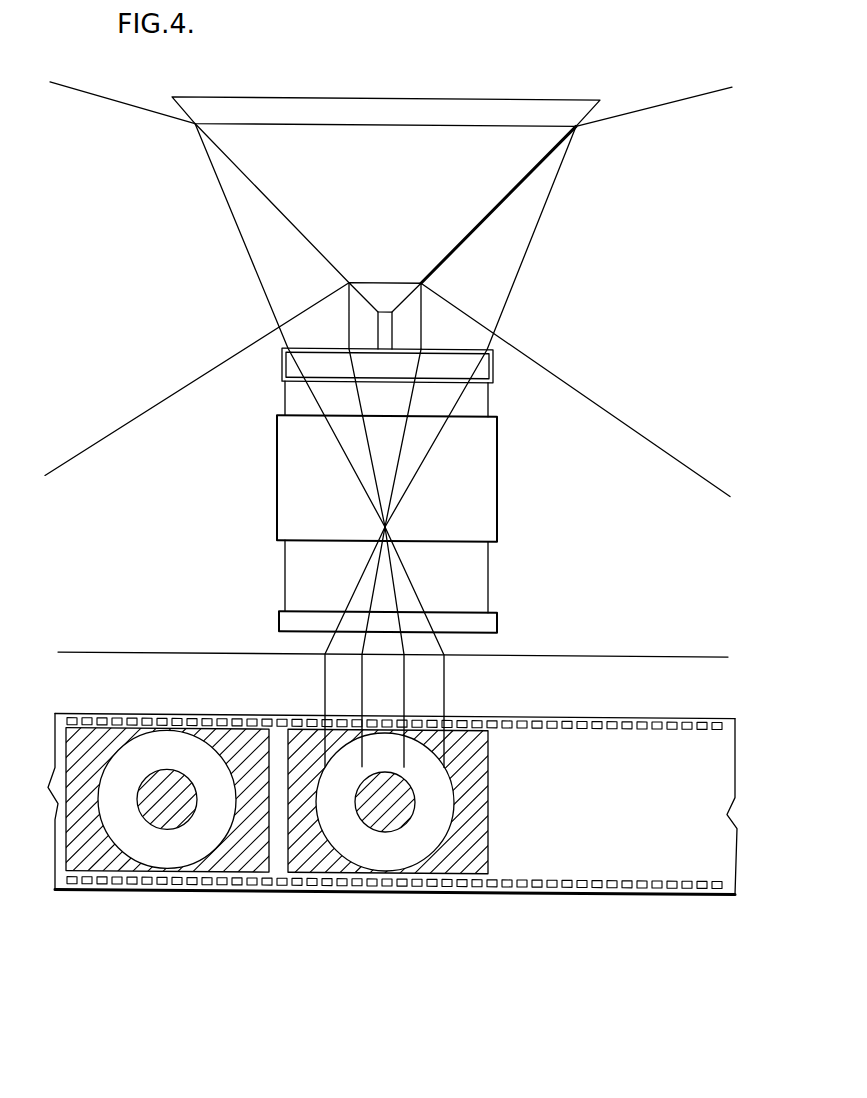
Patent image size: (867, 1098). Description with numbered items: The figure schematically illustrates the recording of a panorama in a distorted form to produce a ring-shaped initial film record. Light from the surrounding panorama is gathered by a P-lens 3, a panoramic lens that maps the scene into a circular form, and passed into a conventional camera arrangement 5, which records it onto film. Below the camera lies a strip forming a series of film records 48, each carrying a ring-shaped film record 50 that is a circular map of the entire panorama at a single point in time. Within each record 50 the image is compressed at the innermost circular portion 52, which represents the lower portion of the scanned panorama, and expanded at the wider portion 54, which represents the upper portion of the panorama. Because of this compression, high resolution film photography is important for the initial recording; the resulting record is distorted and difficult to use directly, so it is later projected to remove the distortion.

The P-lens 3 is at (333, 238).
The conventional camera arrangement 5 is at (488, 572).
The series of film records 48 is at (607, 716).
The film record 50 is at (188, 840).
The innermost circular portion 52 is at (398, 833).
The wider portion 54 is at (437, 840).